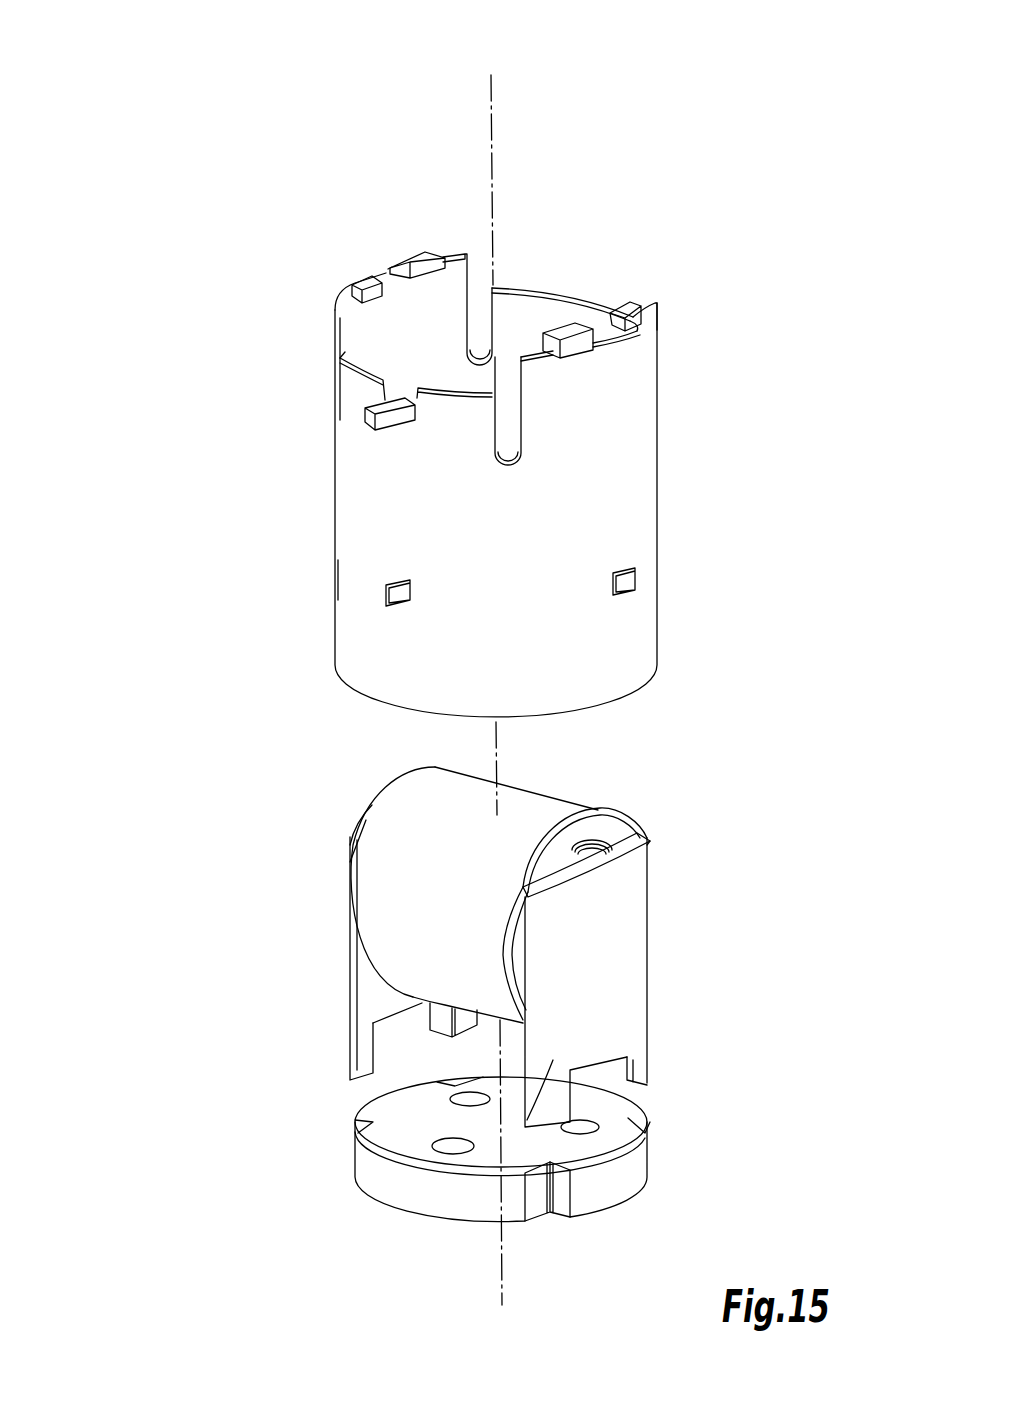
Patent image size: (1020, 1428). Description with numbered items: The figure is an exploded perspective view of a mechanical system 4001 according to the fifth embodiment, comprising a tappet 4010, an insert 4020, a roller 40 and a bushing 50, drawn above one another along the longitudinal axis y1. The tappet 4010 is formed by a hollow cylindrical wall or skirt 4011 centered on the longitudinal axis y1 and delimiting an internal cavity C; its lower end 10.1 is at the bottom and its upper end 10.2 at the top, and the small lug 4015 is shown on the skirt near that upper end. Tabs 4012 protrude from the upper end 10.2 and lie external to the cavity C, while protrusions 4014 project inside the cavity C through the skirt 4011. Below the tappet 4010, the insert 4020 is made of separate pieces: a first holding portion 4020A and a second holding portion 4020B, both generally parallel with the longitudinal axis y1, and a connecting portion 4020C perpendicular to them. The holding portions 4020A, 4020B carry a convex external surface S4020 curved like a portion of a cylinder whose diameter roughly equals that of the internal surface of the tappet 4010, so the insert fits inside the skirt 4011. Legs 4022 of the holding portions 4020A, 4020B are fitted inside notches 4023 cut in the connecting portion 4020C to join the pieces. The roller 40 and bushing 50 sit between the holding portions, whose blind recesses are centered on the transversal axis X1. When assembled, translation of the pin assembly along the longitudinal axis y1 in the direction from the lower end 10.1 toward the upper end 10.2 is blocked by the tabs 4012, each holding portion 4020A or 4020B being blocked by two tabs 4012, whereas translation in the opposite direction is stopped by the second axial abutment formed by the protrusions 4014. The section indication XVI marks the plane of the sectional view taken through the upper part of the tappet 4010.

The mechanical system 4001 is at (256, 210).
The tappet 4010 is at (600, 494).
The hollow cylindrical wall or skirt 4011 is at (342, 583).
The tabs 4012 is at (437, 258).
The protrusions 4014 is at (396, 600).
The lug 4015 is at (384, 414).
The lower end 10.1 is at (362, 697).
The upper end 10.2 is at (368, 367).
The internal cavity C is at (527, 325).
The section line XVI is at (540, 17).
The roller 40 is at (537, 813).
The bushing 50 is at (591, 846).
The transversal axis X1 is at (600, 920).
The convex external surface S4020 is at (596, 988).
The insert 4020 is at (124, 1088).
The first holding portion 4020A is at (372, 998).
The second holding portion 4020B is at (355, 1121).
The connecting portion 4020C is at (362, 1170).
The legs 4022 is at (362, 1070).
The notches 4023 is at (654, 1145).
The longitudinal axis y1 is at (498, 1320).